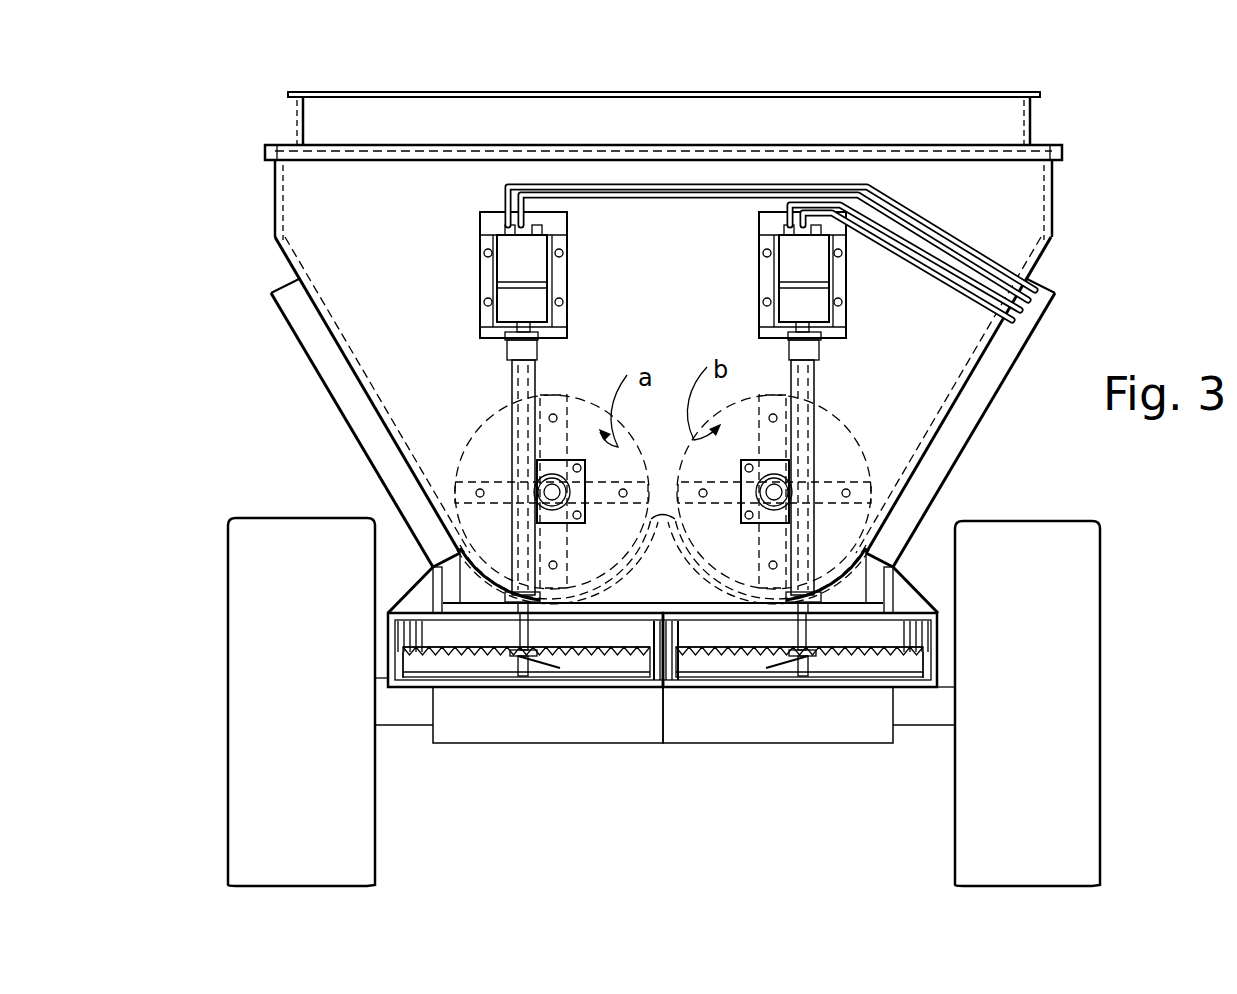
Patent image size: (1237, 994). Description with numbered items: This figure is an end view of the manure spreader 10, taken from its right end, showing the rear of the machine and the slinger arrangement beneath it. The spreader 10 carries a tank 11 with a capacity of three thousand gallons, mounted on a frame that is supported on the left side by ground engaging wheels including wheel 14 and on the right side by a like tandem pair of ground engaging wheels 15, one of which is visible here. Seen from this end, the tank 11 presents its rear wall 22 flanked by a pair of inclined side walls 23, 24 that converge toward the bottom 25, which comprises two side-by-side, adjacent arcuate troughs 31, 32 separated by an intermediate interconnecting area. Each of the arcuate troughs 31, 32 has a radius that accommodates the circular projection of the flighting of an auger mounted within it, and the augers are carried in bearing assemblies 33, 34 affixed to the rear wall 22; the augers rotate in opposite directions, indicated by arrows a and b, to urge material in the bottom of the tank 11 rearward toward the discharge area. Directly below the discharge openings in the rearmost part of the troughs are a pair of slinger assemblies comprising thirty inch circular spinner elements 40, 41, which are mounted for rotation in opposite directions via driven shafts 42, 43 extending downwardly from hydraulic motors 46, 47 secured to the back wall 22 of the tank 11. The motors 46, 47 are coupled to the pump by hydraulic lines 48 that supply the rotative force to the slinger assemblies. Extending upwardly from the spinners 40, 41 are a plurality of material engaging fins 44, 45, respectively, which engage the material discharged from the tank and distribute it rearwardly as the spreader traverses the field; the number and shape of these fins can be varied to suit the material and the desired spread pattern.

The manure spreader 10 is at (250, 100).
The tank 11 is at (1030, 86).
The ground engaging wheel 14 is at (305, 537).
The ground engaging wheel 15 is at (1058, 537).
The rear wall 22 is at (671, 325).
The inclined side wall 23 is at (340, 337).
The inclined side wall 24 is at (960, 380).
The bottom 25 is at (666, 552).
The arcuate trough 31 is at (612, 585).
The arcuate trough 32 is at (715, 558).
The bearing assembly 33 is at (530, 477).
The bearing assembly 34 is at (777, 490).
The spinner element 40 is at (431, 667).
The spinner element 41 is at (907, 667).
The driven shaft 42 is at (512, 630).
The driven shaft 43 is at (828, 657).
The material engaging fin 44 is at (472, 663).
The material engaging fin 45 is at (730, 667).
The hydraulic motor 46 is at (517, 264).
The hydraulic motor 47 is at (787, 265).
The hydraulic lines 48 is at (970, 240).